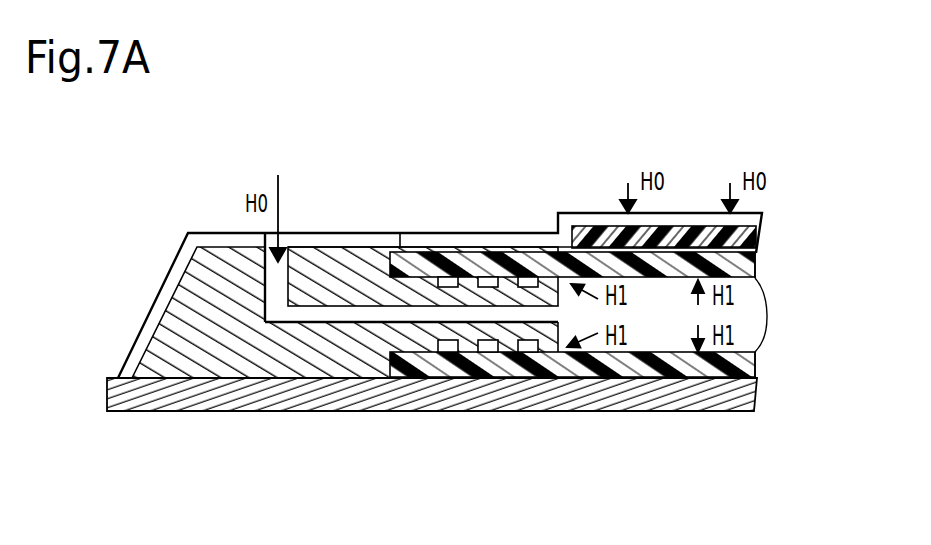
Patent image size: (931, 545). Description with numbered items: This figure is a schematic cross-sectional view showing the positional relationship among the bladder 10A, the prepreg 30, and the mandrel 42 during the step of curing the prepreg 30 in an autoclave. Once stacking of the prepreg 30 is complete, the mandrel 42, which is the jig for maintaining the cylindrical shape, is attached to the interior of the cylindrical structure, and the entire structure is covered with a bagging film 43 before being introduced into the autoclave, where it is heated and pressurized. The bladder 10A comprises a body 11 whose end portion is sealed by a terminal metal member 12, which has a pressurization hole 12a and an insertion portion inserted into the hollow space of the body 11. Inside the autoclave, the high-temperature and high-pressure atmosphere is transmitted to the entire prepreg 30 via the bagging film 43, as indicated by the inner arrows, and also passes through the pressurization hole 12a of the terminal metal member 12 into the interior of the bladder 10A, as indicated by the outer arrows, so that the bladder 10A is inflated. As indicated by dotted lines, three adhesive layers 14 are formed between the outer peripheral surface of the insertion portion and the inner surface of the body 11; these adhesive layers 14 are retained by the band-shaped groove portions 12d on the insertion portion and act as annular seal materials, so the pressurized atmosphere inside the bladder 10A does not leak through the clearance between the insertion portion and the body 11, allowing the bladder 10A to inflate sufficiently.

The bladder 10A is at (218, 212).
The body 11 is at (610, 367).
The terminal metal member 12 is at (222, 352).
The pressurization hole 12a is at (387, 317).
The band-shaped groove portions 12d is at (485, 262).
The adhesive layers 14 is at (400, 232).
The prepreg 30 is at (577, 240).
The mandrel 42 is at (307, 402).
The bagging film 43 is at (340, 240).